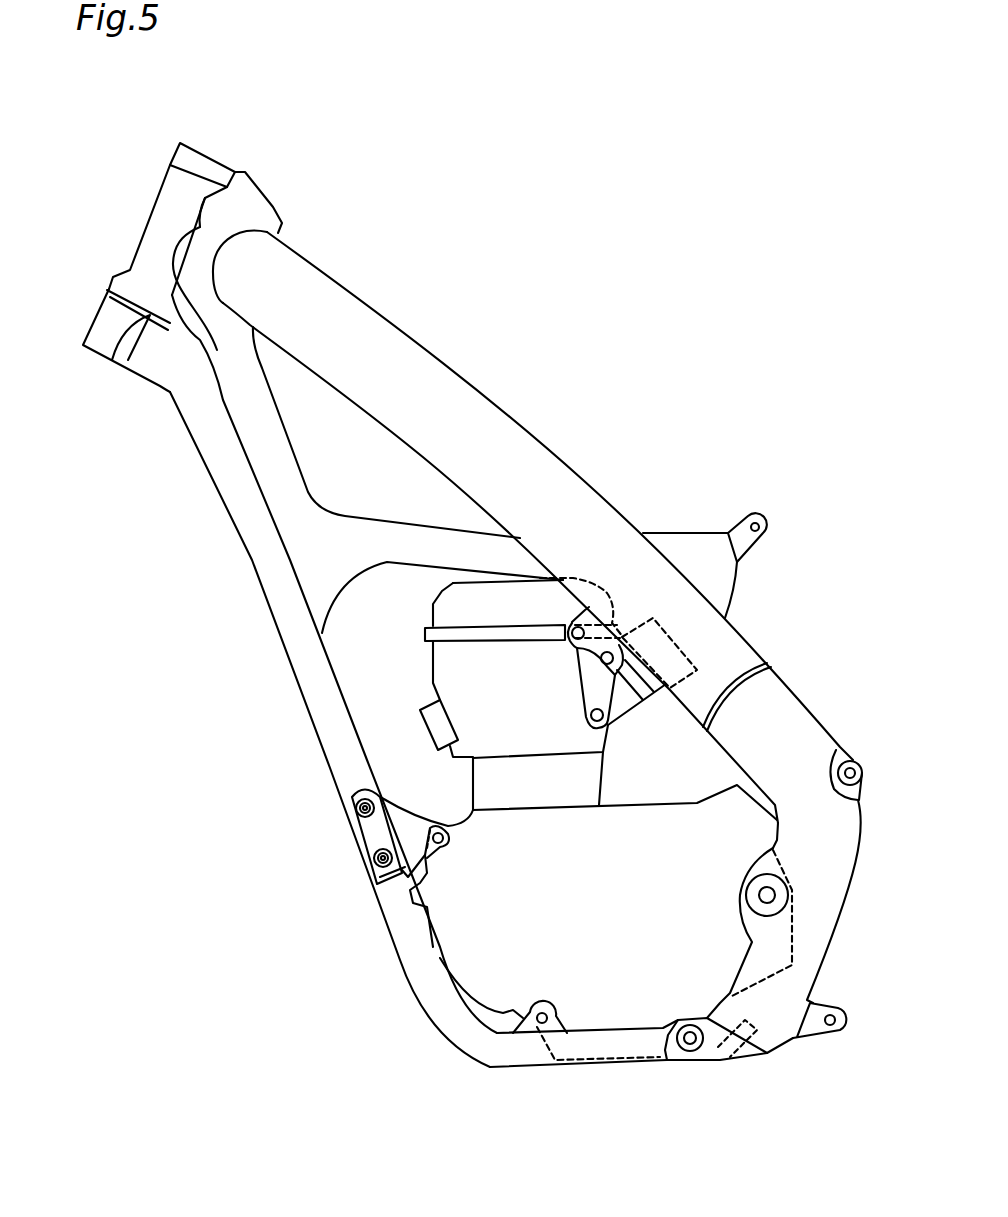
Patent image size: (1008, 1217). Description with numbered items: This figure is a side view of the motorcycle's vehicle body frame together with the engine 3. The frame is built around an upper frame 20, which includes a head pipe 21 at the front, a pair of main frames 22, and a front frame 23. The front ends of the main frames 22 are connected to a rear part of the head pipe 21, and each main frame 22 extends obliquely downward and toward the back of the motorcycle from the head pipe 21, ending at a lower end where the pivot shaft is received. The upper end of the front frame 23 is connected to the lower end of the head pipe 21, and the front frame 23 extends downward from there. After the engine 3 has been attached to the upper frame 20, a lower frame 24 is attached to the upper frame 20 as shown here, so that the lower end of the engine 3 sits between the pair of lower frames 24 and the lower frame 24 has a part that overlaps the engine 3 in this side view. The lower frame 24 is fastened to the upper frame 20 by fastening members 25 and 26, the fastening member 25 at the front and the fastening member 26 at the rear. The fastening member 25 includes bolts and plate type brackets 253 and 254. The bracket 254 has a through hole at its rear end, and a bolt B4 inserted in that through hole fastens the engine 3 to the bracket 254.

The upper frame 20 is at (443, 326).
The head pipe 21 is at (151, 226).
The main frame 22 is at (530, 430).
The front frame 23 is at (241, 585).
The lower frame 24 is at (490, 1067).
The fastening member 25 is at (351, 843).
The bracket 253 is at (352, 802).
The bracket 254 is at (410, 822).
The bolt B4 is at (450, 842).
The fastening member 26 is at (694, 1057).
The engine 3 is at (480, 950).